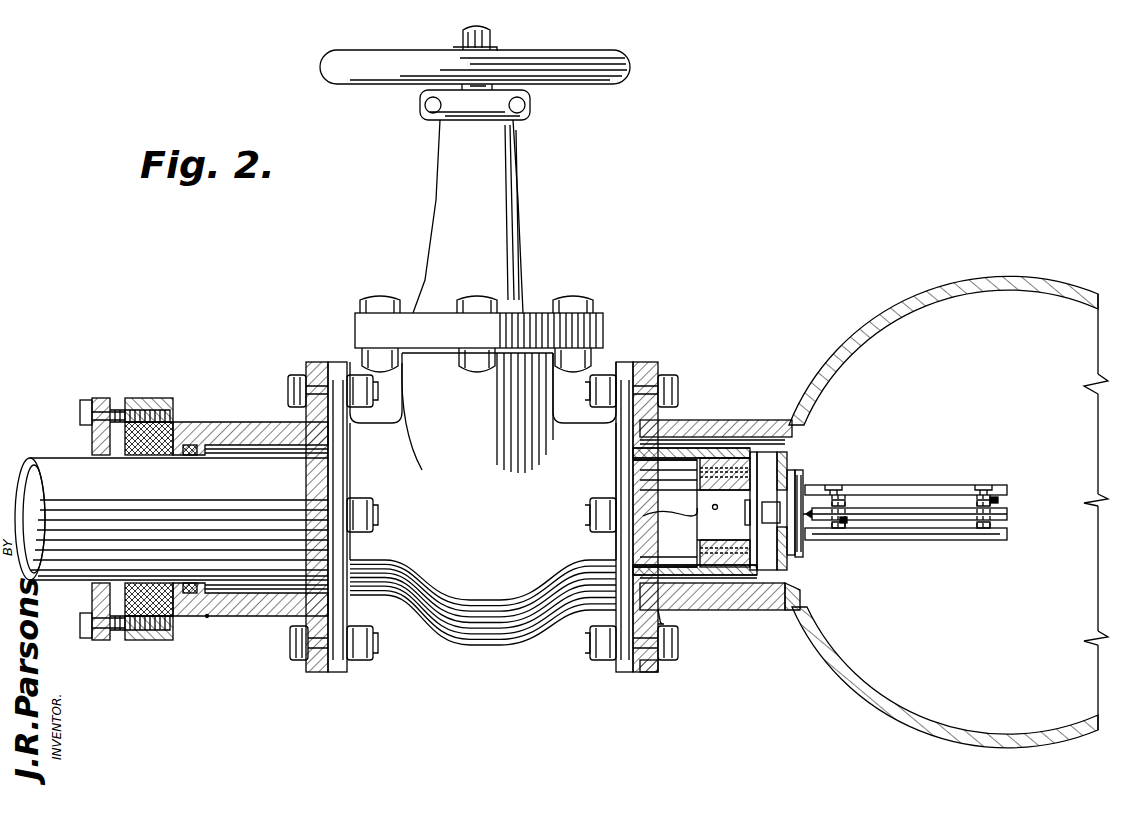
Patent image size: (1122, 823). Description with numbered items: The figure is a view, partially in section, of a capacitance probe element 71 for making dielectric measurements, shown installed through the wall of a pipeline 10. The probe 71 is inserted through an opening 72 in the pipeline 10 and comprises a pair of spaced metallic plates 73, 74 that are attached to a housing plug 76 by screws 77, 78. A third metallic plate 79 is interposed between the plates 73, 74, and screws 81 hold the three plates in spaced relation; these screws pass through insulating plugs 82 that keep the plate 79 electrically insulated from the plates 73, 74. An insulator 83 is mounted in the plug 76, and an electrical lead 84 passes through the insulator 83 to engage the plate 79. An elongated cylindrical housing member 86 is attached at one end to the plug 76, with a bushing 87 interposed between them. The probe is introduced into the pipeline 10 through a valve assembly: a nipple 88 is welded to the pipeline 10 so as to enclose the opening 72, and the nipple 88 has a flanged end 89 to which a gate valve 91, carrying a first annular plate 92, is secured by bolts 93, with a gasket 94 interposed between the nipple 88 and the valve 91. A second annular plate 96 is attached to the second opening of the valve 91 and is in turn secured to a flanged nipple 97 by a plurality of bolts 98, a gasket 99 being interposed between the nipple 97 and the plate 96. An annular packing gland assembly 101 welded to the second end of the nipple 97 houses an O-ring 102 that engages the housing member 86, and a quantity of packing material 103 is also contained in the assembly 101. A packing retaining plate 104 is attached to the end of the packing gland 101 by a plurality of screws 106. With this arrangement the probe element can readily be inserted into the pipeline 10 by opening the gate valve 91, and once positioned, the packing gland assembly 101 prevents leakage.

The pipeline 10 is at (892, 305).
The probe element 71 is at (925, 506).
The opening 72 is at (791, 562).
The metallic plate 73 is at (902, 485).
The metallic plate 74 is at (898, 538).
The housing plug 76 is at (767, 606).
The screw 77 is at (716, 507).
The screw 78 is at (748, 533).
The third metallic plate 79 is at (924, 510).
The screws 81 is at (998, 500).
The insulating plugs 82 is at (848, 500).
The insulator 83 is at (797, 473).
The electrical lead 84 is at (644, 516).
The cylindrical housing member 86 is at (222, 516).
The bushing 87 is at (726, 462).
The nipple 88 is at (708, 600).
The flanged end 89 is at (648, 672).
The gate valve 91 is at (520, 170).
The first annular plate 92 is at (630, 674).
The bolts 93 is at (672, 660).
The gasket 94 is at (646, 366).
The second annular plate 96 is at (346, 674).
The flanged nipple 97 is at (312, 366).
The bolts 98 is at (288, 390).
The gasket 99 is at (326, 676).
The packing gland assembly 101 is at (168, 642).
The O-ring 102 is at (194, 582).
The packing material 103 is at (150, 600).
The packing retaining plate 104 is at (106, 642).
The screws 106 is at (85, 644).